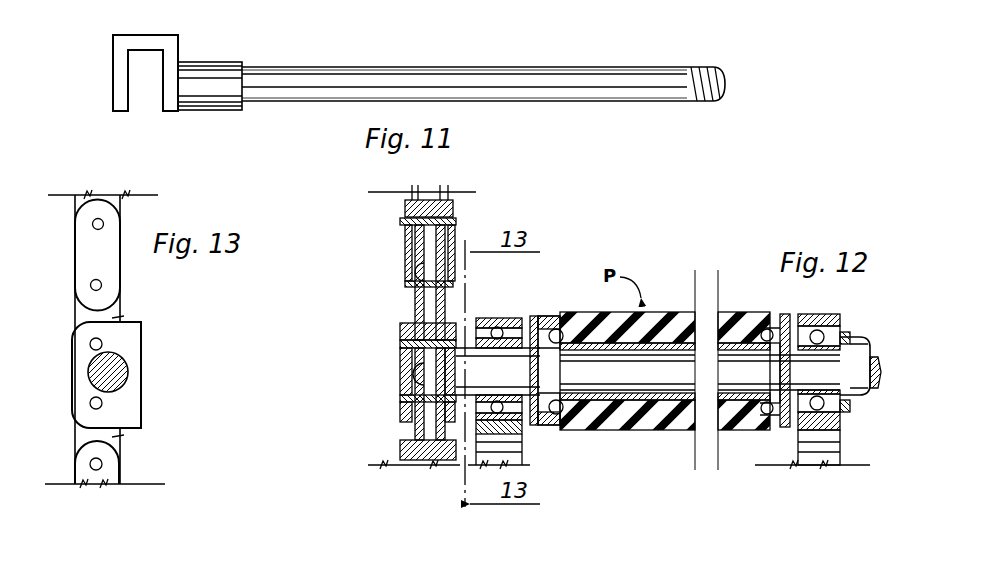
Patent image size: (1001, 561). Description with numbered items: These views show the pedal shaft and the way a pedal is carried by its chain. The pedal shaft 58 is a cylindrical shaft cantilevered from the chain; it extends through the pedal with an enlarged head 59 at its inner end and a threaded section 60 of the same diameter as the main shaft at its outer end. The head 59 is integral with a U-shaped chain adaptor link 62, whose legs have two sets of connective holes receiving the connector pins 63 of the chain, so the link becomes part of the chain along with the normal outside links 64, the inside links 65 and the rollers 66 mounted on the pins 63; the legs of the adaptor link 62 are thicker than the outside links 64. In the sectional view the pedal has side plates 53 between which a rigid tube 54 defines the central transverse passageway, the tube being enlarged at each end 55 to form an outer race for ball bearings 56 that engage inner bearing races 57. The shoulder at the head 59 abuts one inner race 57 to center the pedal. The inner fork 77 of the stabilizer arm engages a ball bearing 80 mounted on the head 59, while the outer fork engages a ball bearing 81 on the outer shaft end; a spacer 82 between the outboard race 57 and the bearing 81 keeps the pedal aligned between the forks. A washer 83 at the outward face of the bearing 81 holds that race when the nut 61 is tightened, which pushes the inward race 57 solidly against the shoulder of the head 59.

In FIG. 12, the side plates 53 is at (532, 318).
In FIG. 12, the rigid tube 54 is at (617, 405).
In FIG. 12, the enlarged end 55 is at (559, 418).
In FIG. 12, the ball bearings 56 is at (560, 330).
In FIG. 12, the inner bearing race 57 is at (786, 327).
In FIG. 11, the pedal shaft 58 is at (417, 73).
In FIG. 12, the pedal shaft 58 is at (712, 350).
In FIG. 11, the head 59 is at (213, 68).
In FIG. 13, the head 59 is at (122, 370).
In FIG. 12, the head 59 is at (500, 376).
In FIG. 11, the threaded section 60 is at (700, 68).
In FIG. 12, the threaded section 60 is at (881, 373).
In FIG. 12, the nut 61 is at (863, 351).
In FIG. 11, the chain adaptor link 62 is at (153, 37).
In FIG. 13, the chain adaptor link 62 is at (131, 333).
In FIG. 12, the chain adaptor link 62 is at (400, 358).
In FIG. 13, the connector pins 63 is at (104, 225).
In FIG. 12, the connector pins 63 is at (404, 220).
In FIG. 13, the outside links 64 is at (116, 276).
In FIG. 12, the outside links 64 is at (404, 252).
In FIG. 13, the inside links 65 is at (116, 318).
In FIG. 12, the inside links 65 is at (414, 312).
In FIG. 12, the rollers 66 is at (440, 212).
In FIG. 12, the inner fork 77 is at (508, 452).
In FIG. 12, the ball bearing 80 is at (483, 320).
In FIG. 12, the ball bearing 81 is at (845, 335).
In FIG. 12, the spacer 82 is at (828, 312).
In FIG. 12, the washer 83 is at (851, 410).